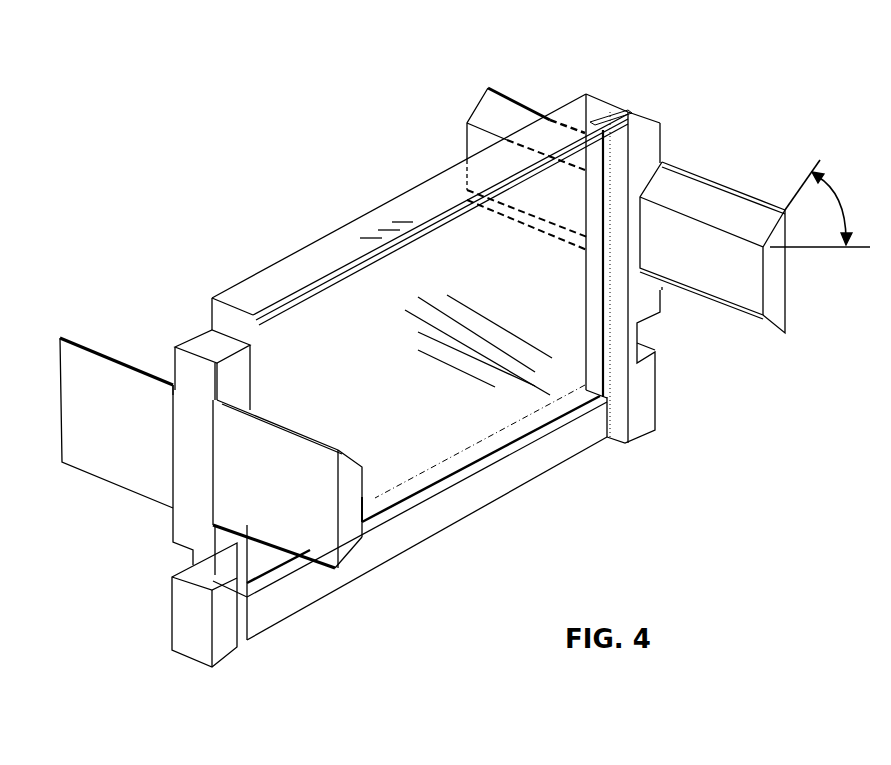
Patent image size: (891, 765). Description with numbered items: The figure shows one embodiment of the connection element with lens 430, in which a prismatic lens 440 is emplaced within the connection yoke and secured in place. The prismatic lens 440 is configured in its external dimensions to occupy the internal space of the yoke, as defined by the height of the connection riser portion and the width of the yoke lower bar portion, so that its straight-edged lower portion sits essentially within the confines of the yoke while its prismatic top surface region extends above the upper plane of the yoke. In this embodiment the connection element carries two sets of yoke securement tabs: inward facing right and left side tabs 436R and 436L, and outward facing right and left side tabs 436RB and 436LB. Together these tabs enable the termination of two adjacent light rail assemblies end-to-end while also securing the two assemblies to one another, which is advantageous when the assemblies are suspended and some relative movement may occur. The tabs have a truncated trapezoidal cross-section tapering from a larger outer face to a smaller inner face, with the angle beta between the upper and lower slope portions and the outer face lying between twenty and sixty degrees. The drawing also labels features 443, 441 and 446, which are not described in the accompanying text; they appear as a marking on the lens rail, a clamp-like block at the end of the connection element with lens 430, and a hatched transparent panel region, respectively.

The connection element with lens 430 is at (201, 184).
The prismatic lens 440 is at (288, 273).
The groove 443 is at (381, 218).
The clamp block 441 is at (188, 375).
The outward facing left side tab 436LB is at (115, 422).
The inward facing left side tab 436L is at (313, 508).
The transparent sheet 446 is at (480, 337).
The outward facing right side tab 436RB is at (505, 120).
The inward facing right side tab 436R is at (740, 268).